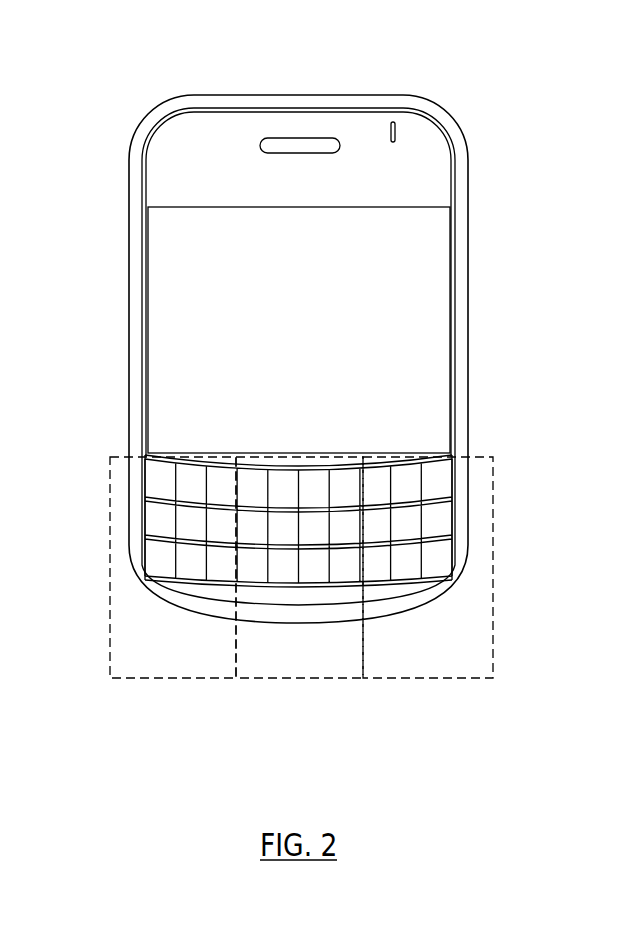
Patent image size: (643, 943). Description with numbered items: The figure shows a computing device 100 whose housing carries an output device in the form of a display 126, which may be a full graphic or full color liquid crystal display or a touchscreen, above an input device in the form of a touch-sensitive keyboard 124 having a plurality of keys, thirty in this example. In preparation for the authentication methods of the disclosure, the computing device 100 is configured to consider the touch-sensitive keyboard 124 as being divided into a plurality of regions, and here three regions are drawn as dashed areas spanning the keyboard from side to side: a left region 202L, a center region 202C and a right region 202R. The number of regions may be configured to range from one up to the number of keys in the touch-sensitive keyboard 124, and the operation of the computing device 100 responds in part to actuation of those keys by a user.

The computing device 100 is at (522, 83).
The touch-sensitive keyboard 124 is at (146, 519).
The display 126 is at (308, 306).
The left region 202L is at (197, 667).
The center region 202C is at (323, 667).
The right region 202R is at (455, 667).